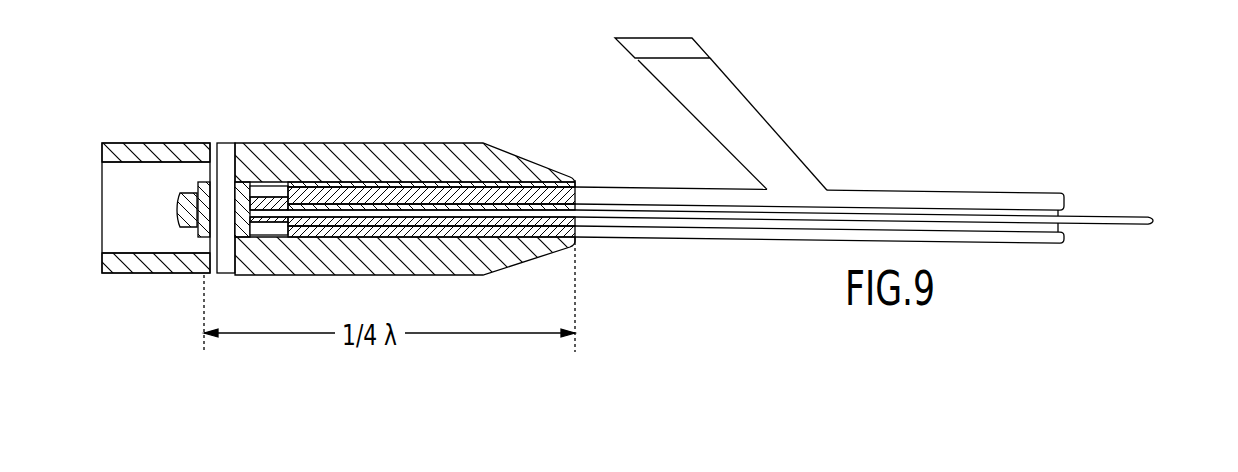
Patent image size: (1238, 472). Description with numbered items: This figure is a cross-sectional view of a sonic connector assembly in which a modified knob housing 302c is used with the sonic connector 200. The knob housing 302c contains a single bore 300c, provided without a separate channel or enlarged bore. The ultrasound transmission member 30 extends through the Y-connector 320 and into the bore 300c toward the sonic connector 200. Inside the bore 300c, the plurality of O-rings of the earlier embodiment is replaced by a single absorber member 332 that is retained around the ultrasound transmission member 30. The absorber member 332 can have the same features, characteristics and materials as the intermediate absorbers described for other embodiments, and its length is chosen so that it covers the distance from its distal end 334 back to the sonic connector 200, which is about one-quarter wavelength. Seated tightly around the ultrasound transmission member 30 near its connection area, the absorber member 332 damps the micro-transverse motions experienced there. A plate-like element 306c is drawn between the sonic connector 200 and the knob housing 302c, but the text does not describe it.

The sonic connector 200 is at (168, 234).
The spacer plate 306c is at (225, 145).
The bore 300c is at (270, 192).
The knob housing 302c is at (407, 139).
The absorber member 332 is at (475, 190).
The distal end of the absorber member 334 is at (555, 187).
The Y-connector 320 is at (838, 178).
The ultrasound transmission member 30 is at (675, 218).